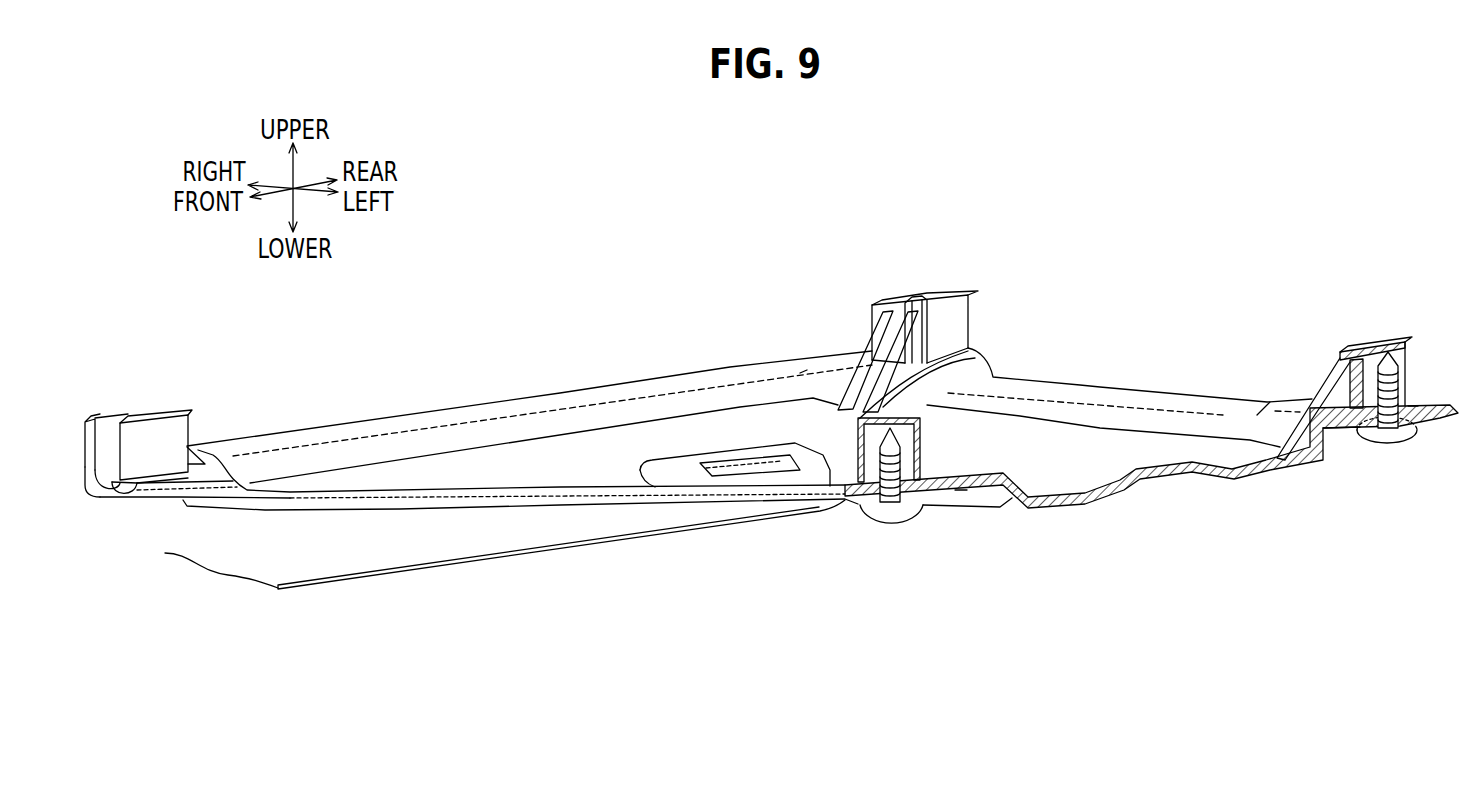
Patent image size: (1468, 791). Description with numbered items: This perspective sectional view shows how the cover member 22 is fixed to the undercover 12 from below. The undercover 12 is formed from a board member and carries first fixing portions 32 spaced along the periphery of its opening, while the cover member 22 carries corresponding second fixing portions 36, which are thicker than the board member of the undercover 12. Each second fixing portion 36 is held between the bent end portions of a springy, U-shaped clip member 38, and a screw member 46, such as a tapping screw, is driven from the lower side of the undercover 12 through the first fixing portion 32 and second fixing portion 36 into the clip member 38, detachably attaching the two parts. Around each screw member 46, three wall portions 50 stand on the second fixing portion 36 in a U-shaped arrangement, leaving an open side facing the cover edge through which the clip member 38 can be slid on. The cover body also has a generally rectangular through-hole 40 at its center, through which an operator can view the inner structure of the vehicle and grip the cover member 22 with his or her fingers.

The undercover 12 is at (434, 595).
The cover member 22 is at (1085, 505).
The first fixing portion 32 is at (847, 510).
The second fixing portion 36 is at (960, 497).
The clip member 38 is at (101, 490).
The through-hole 40 is at (748, 455).
The screw member 46 is at (888, 528).
The wall portion 50 is at (160, 413).